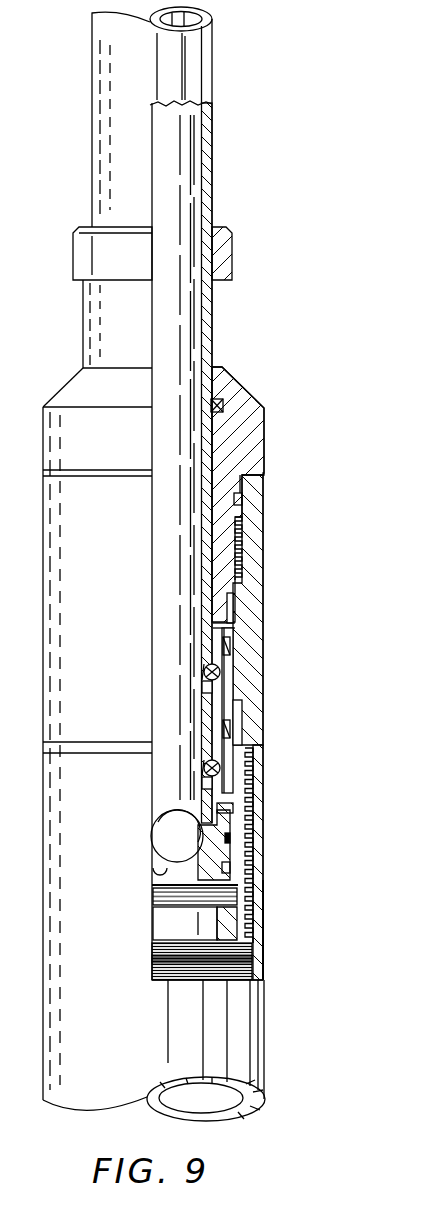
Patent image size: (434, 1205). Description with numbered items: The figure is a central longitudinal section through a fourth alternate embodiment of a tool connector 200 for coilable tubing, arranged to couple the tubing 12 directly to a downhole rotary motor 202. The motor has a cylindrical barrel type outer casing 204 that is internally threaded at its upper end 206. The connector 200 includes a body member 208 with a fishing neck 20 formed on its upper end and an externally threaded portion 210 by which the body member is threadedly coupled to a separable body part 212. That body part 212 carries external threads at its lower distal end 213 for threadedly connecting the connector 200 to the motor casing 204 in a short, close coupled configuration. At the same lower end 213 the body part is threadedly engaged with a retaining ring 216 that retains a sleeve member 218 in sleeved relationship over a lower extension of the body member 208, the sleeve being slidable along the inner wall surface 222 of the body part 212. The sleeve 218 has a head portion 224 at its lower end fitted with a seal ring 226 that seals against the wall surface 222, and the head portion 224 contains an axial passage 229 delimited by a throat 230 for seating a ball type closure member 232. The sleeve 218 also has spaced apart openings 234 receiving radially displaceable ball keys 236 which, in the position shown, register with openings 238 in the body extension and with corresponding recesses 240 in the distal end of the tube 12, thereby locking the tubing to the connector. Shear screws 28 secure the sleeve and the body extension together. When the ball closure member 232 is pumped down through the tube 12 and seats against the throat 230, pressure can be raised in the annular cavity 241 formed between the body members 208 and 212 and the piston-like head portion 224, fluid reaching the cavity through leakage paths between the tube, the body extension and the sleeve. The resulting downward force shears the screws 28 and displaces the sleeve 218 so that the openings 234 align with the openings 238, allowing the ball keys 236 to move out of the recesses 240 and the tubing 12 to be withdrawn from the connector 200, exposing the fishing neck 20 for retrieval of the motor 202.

The tubing 12 is at (211, 64).
The fishing neck 20 is at (229, 227).
The tool connector 200 is at (269, 404).
The body member 208 is at (265, 437).
The externally threaded portion 210 is at (243, 531).
The separable body part 212 is at (252, 590).
The annular cavity 241 is at (235, 610).
The inner wall surface 222 is at (232, 692).
The spaced apart openings 234 is at (231, 652).
The sleeve member 218 is at (239, 722).
The openings 238 is at (205, 667).
The ball keys 236 is at (206, 673).
The recesses 240 is at (209, 687).
The upper end 206 is at (249, 783).
The shear screws 28 is at (234, 810).
The throat 230 is at (192, 822).
The ball type closure member 232 is at (157, 868).
The outer casing 204 is at (261, 855).
The seal ring 226 is at (249, 868).
The head portion 224 is at (162, 897).
The axial passage 229 is at (196, 880).
The lower distal end 213 is at (264, 918).
The retaining ring 216 is at (224, 942).
The downhole rotary motor 202 is at (270, 1038).